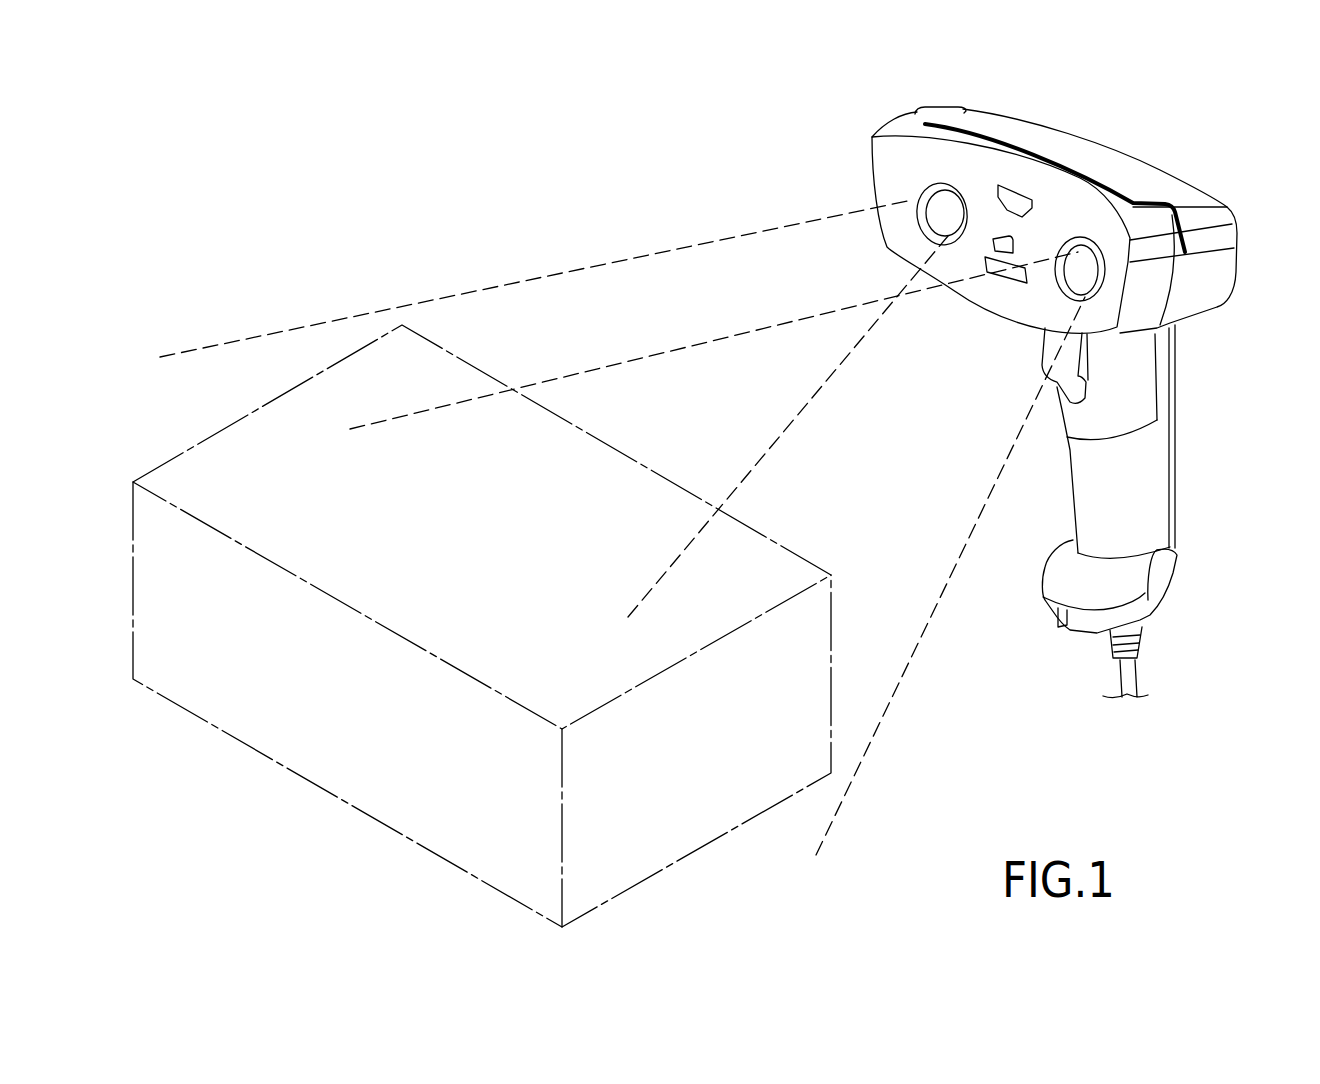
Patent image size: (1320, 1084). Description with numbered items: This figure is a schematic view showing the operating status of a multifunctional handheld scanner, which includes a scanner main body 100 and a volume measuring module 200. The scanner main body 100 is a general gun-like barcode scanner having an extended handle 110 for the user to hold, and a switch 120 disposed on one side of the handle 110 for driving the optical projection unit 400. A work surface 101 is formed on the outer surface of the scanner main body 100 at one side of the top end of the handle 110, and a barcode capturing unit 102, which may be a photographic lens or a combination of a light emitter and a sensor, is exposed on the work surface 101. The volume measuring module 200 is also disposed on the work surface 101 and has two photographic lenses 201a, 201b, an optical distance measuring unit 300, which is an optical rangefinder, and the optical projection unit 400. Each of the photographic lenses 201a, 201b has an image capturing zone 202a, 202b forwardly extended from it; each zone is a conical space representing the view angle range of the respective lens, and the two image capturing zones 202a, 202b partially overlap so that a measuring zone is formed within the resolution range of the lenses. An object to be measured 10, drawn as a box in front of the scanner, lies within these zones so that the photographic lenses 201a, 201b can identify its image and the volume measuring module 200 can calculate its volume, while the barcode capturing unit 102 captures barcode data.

The object to be measured 10 is at (300, 686).
The scanner main body 100 is at (1006, 382).
The work surface 101 is at (880, 170).
The barcode capturing unit 102 is at (1012, 198).
The handle 110 is at (1137, 472).
The switch 120 is at (1043, 352).
The volume measuring module 200 is at (920, 176).
The photographic lens 201a is at (1077, 265).
The photographic lens 201b is at (945, 213).
The image capturing zone 202a is at (905, 567).
The image capturing zone 202b is at (637, 296).
The optical distance measuring unit 300 is at (1012, 278).
The optical projection unit 400 is at (993, 246).